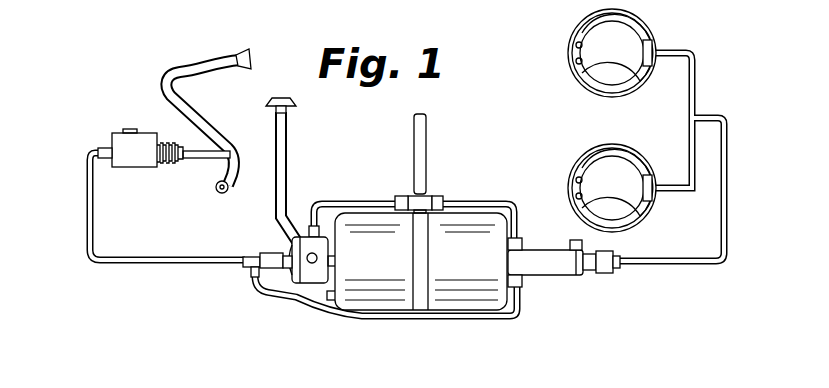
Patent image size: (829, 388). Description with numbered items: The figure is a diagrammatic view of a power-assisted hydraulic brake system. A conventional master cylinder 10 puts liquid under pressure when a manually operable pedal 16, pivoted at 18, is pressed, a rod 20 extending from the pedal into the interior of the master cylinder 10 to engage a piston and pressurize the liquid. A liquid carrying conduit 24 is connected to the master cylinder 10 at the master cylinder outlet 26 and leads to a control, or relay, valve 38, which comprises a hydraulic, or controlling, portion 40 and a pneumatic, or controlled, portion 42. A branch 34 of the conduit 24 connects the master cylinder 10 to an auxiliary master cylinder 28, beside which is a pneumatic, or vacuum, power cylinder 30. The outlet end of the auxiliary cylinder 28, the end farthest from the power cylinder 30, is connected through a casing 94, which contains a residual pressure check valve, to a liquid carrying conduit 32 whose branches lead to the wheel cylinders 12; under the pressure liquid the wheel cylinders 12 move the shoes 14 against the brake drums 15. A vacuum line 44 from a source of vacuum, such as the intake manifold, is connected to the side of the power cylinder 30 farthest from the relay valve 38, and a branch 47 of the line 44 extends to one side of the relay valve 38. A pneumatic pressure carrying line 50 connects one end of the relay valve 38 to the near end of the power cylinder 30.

The master cylinder 10 is at (140, 143).
The wheel cylinders 12 is at (655, 48).
The shoes 14 is at (600, 84).
The brake drum 15 is at (572, 38).
The pedal 16 is at (206, 122).
The pivot 18 is at (229, 188).
The rod 20 is at (195, 158).
The liquid carrying conduit 24 is at (141, 263).
The master cylinder outlet 26 is at (110, 150).
The auxiliary master cylinder 28 is at (545, 278).
The power cylinder 30 is at (478, 222).
The liquid carrying conduit 32 is at (670, 265).
The branch 34 is at (398, 320).
The control valve 38 is at (275, 254).
The hydraulic portion 40 is at (250, 270).
The pneumatic portion 42 is at (298, 226).
The vacuum line 44 is at (445, 203).
The branch line 47 is at (345, 204).
The pneumatic pressure carrying line 50 is at (324, 290).
The casing 94 is at (596, 273).